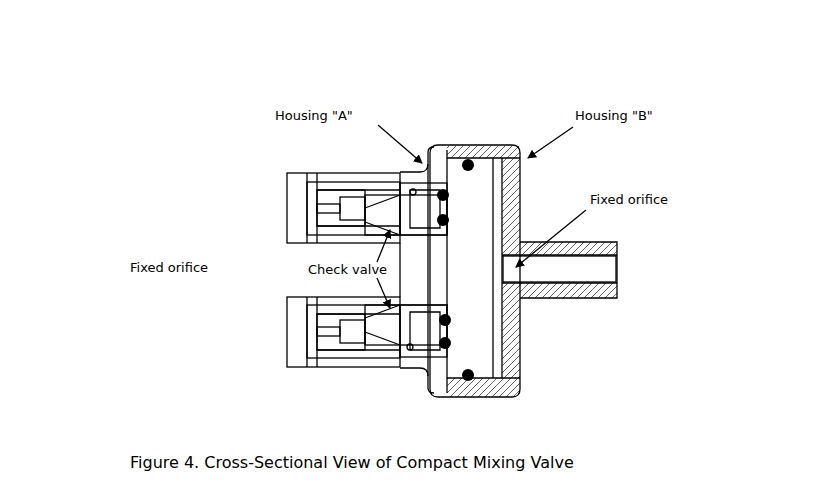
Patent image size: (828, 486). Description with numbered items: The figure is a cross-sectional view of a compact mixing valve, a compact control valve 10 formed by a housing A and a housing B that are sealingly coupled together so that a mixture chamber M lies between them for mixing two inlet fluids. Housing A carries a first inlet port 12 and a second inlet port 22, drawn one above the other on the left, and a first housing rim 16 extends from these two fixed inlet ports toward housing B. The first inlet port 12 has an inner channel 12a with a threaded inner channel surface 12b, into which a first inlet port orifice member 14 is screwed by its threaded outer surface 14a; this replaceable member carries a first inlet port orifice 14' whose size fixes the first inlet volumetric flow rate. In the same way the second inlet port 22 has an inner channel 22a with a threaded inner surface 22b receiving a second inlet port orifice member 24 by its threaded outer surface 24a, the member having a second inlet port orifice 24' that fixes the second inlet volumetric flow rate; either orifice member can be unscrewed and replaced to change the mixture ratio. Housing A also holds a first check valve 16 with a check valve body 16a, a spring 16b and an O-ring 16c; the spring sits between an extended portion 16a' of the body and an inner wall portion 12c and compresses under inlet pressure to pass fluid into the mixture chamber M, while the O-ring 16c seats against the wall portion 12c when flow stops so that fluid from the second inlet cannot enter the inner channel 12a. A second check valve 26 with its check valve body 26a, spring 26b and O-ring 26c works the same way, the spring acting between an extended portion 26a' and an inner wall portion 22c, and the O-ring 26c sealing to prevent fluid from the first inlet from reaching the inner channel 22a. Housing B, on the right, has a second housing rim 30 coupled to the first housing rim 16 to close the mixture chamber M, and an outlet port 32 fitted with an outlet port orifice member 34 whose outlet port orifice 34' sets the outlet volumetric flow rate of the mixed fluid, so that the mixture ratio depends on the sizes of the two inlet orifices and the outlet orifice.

The compact control valve 10 is at (243, 78).
The first inlet port 12 is at (290, 232).
The inner channel 12a is at (298, 210).
The threaded inner channel surface 12b is at (347, 192).
The inner wall portion 12c is at (447, 229).
The first inlet port orifice member 14 is at (213, 232).
The first inlet port orifice 14' is at (268, 195).
The threaded outer surface 14a is at (345, 196).
The first check valve 16 is at (458, 172).
The check valve body 16a is at (374, 169).
The extended portion 16a' is at (342, 167).
The spring 16b is at (430, 205).
The O-ring 16c is at (449, 192).
The second inlet port 22 is at (345, 322).
The inner channel 22a is at (298, 323).
The threaded inner surface 22b is at (350, 355).
The inner wall portion 22c is at (437, 353).
The second inlet port orifice member 24 is at (224, 305).
The second inlet port orifice 24' is at (267, 340).
The threaded outer surface 24a is at (345, 343).
The second check valve 26 is at (378, 344).
The check valve body 26a is at (408, 367).
The extended portion 26a' is at (370, 382).
The spring 26b is at (410, 352).
The O-ring 26c is at (449, 350).
The second housing rim 30 is at (488, 148).
The outlet port 32 is at (585, 293).
The outlet port orifice member 34 is at (611, 237).
The outlet port orifice 34' is at (601, 272).
The mixture chamber M is at (484, 289).